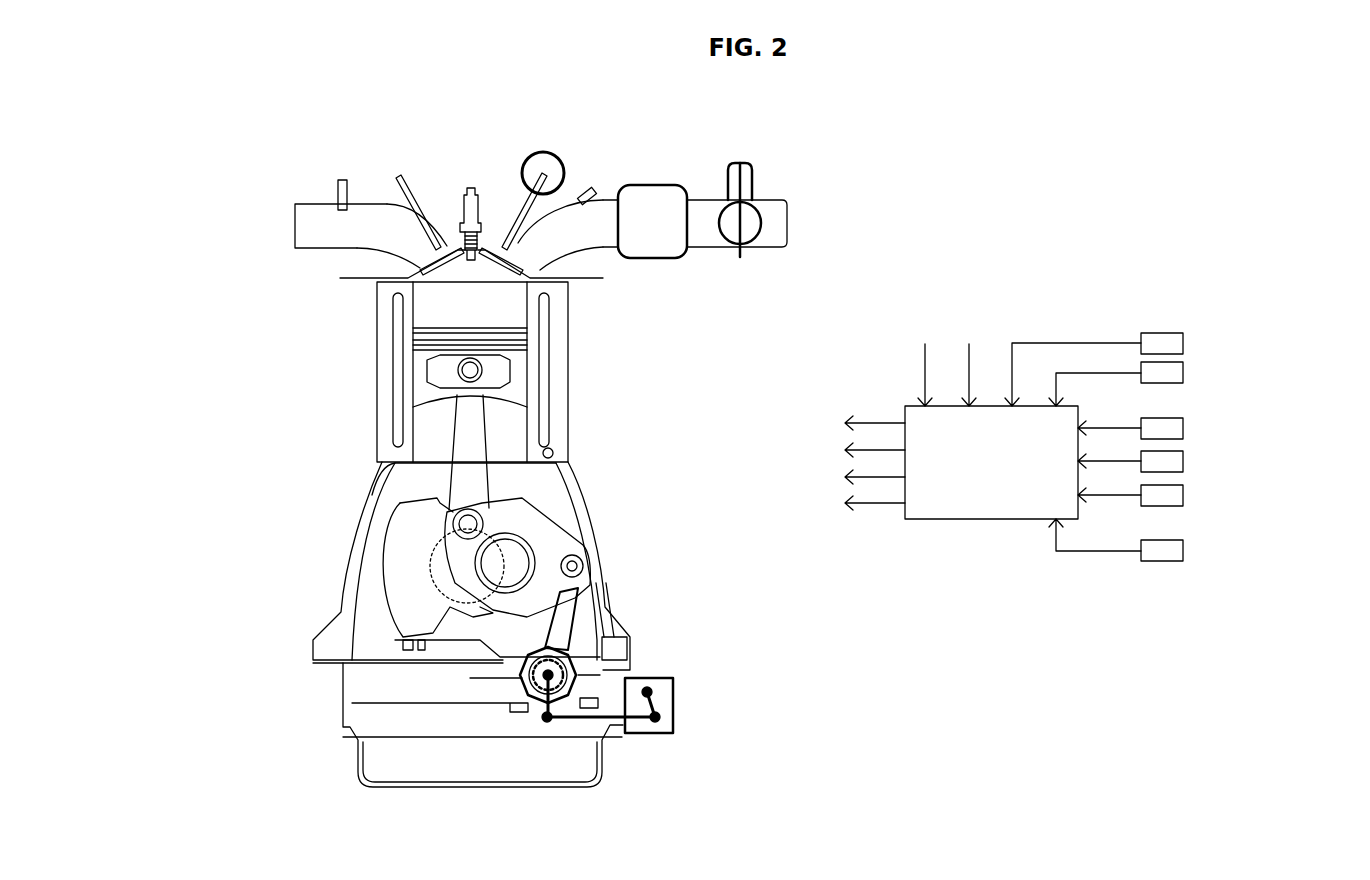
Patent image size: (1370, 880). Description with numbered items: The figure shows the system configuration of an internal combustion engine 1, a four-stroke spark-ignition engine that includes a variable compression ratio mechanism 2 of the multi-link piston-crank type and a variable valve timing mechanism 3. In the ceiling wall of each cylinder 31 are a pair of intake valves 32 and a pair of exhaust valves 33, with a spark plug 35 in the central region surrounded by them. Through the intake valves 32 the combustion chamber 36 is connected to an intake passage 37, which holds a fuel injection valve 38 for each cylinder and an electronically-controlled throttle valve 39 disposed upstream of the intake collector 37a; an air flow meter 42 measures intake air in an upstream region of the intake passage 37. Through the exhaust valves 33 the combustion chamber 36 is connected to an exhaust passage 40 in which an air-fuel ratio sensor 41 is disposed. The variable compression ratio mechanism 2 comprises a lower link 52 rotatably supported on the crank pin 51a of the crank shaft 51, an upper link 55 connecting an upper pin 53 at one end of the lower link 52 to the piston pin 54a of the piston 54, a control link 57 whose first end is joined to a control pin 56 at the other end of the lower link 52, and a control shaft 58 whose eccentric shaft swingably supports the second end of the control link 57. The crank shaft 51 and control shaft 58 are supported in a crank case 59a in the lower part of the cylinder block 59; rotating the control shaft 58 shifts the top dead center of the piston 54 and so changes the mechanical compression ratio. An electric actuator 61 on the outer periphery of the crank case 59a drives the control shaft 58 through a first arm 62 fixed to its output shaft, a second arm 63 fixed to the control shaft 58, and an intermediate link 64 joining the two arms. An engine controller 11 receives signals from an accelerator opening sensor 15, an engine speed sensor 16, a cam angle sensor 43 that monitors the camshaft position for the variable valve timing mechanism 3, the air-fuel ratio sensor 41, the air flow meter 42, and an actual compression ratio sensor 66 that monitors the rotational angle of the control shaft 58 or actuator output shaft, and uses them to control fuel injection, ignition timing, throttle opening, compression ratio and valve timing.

The internal combustion engine 1 is at (340, 432).
The variable compression ratio mechanism 2 is at (362, 528).
The variable valve timing mechanism 3 is at (538, 172).
The engine controller 11 is at (991, 475).
The accelerator opening sensor 15 is at (1162, 344).
The engine speed sensor 16 is at (1162, 373).
The cylinder 31 is at (413, 320).
The intake valves 32 is at (603, 278).
The exhaust valves 33 is at (420, 256).
The spark plug 35 is at (462, 212).
The combustion chamber 36 is at (437, 272).
The intake passage 37 is at (775, 235).
The intake collector 37a is at (666, 262).
The fuel injection valve 38 is at (585, 196).
The throttle valve 39 is at (748, 233).
The exhaust passage 40 is at (300, 232).
The air-fuel ratio sensor 41 is at (1162, 462).
The air flow meter 42 is at (1162, 496).
The cam angle sensor 43 is at (1162, 429).
The crank shaft 51 is at (395, 565).
The crank pin 51a is at (518, 556).
The lower link 52 is at (533, 533).
The upper pin 53 is at (455, 518).
The piston 54 is at (426, 365).
The piston pin 54a is at (468, 372).
The upper link 55 is at (472, 406).
The control pin 56 is at (584, 566).
The control link 57 is at (562, 630).
The control shaft 58 is at (522, 672).
The cylinder block 59 is at (316, 654).
The crank case 59a is at (398, 720).
The electric actuator 61 is at (677, 686).
The first arm 62 is at (660, 703).
The second arm 63 is at (530, 706).
The intermediate link 64 is at (583, 720).
The actual compression ratio sensor 66 is at (1162, 551).